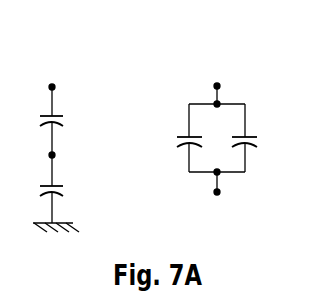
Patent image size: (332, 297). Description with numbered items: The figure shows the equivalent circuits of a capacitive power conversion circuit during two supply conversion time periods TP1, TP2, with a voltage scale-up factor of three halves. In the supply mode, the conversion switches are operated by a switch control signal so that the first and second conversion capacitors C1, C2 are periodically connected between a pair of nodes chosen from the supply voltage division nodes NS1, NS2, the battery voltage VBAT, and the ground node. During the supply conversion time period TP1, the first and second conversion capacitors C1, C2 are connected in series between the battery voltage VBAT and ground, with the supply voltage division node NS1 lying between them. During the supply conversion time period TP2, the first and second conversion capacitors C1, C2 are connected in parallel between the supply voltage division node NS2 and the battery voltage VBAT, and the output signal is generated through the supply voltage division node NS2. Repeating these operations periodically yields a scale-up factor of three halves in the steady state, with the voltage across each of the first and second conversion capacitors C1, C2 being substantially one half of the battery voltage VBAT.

The supply conversion time period TP1 is at (55, 122).
The supply conversion time period TP2 is at (216, 102).
The first conversion capacitor C1 is at (121, 133).
The second conversion capacitor C2 is at (161, 168).
The supply voltage division node NS1 is at (30, 159).
The supply voltage division node NS2 is at (215, 77).
The battery voltage VBAT is at (135, 142).